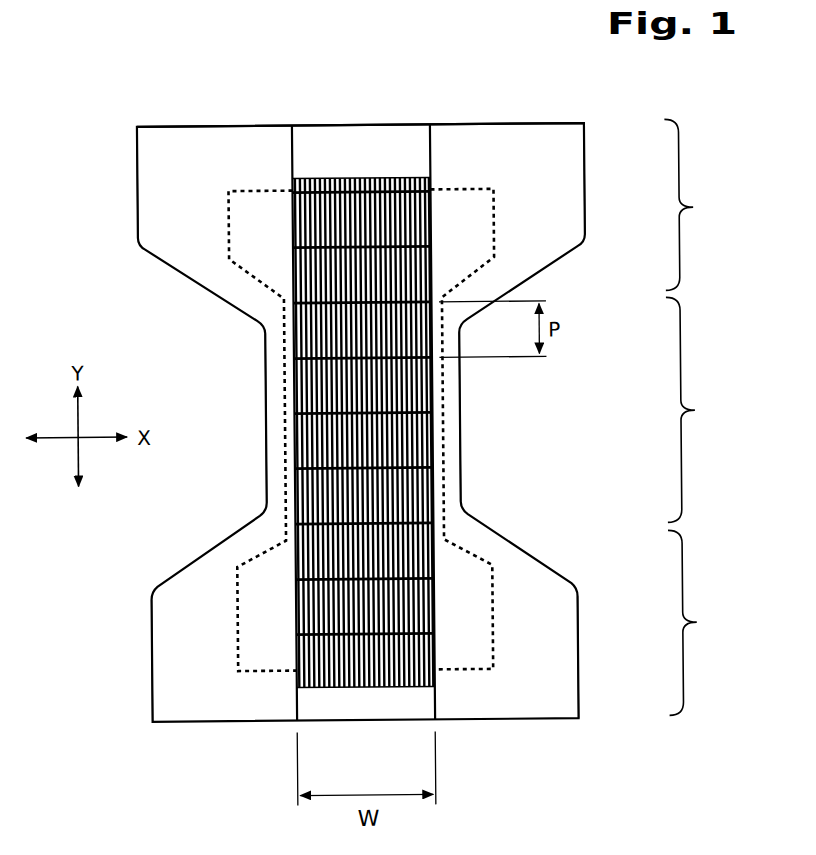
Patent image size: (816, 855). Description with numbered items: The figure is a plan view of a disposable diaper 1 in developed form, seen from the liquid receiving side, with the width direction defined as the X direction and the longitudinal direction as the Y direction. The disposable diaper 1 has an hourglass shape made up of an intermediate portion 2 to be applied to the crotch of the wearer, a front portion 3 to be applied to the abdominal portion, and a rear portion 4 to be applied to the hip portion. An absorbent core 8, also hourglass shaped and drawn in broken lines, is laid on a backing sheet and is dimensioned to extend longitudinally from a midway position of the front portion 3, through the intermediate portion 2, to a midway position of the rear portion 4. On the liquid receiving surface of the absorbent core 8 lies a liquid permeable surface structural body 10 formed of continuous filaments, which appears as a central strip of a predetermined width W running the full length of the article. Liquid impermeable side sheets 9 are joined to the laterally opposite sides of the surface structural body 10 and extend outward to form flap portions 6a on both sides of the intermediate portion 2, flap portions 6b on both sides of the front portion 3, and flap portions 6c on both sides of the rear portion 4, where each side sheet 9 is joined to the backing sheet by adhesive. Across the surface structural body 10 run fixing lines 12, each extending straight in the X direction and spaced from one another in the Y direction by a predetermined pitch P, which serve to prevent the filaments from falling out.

The disposable diaper 1 is at (158, 303).
The intermediate portion 2 is at (695, 409).
The front portion 3 is at (693, 204).
The rear portion 4 is at (697, 622).
The flap portions 6a is at (275, 470).
The flap portions 6b is at (153, 200).
The flap portions 6c is at (165, 684).
The absorbent core 8 is at (482, 582).
The side sheets 9 is at (213, 145).
The surface structural body 10 is at (366, 698).
The fixing lines 12 is at (410, 242).